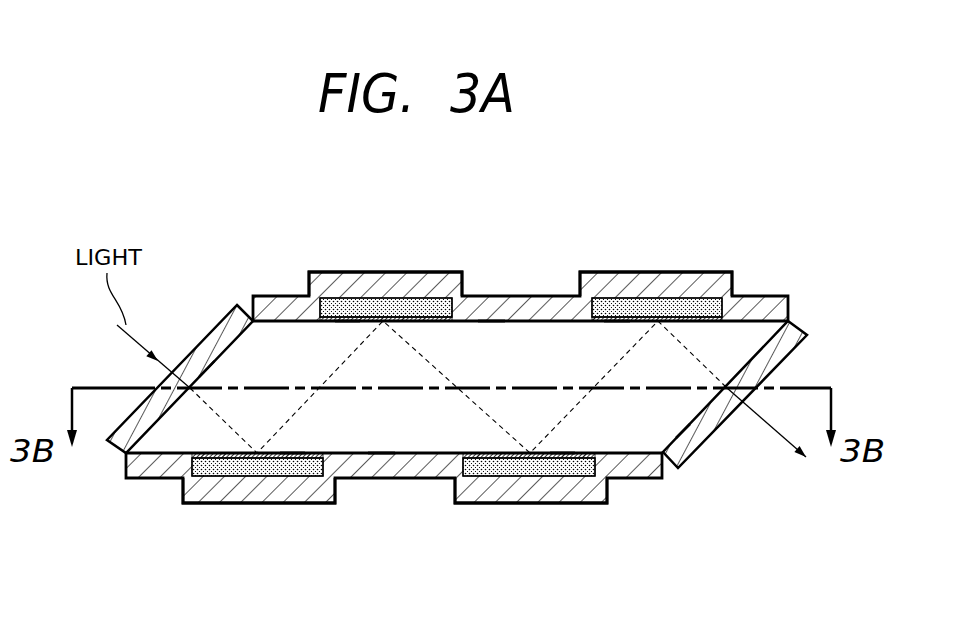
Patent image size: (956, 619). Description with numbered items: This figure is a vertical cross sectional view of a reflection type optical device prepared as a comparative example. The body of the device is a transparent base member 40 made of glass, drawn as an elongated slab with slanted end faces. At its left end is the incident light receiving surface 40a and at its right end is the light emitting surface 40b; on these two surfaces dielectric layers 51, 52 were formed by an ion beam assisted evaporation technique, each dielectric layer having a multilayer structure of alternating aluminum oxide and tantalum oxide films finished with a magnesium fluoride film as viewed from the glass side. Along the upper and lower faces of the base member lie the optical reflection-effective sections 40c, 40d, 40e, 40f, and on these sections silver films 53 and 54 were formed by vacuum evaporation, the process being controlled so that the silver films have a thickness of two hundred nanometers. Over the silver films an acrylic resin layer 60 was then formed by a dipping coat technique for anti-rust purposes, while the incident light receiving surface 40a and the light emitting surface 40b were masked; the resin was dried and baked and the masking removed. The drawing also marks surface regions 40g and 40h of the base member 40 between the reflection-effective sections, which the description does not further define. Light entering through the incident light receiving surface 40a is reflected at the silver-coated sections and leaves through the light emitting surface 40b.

The transparent base member 40 is at (542, 345).
The incident light receiving surface 40a is at (222, 372).
The light emitting surface 40b is at (680, 423).
The optical reflection-effective section 40c is at (355, 321).
The optical reflection-effective section 40d is at (627, 321).
The optical reflection-effective section 40e is at (302, 453).
The optical reflection-effective section 40f is at (572, 453).
The upper reflection surface 40g is at (500, 321).
The lower reflection surface 40h is at (392, 453).
The dielectric layer 51 is at (225, 322).
The dielectric layer 52 is at (793, 333).
The silver film 53 is at (392, 305).
The silver film 54 is at (237, 468).
The acrylic resin layer 60 is at (428, 277).